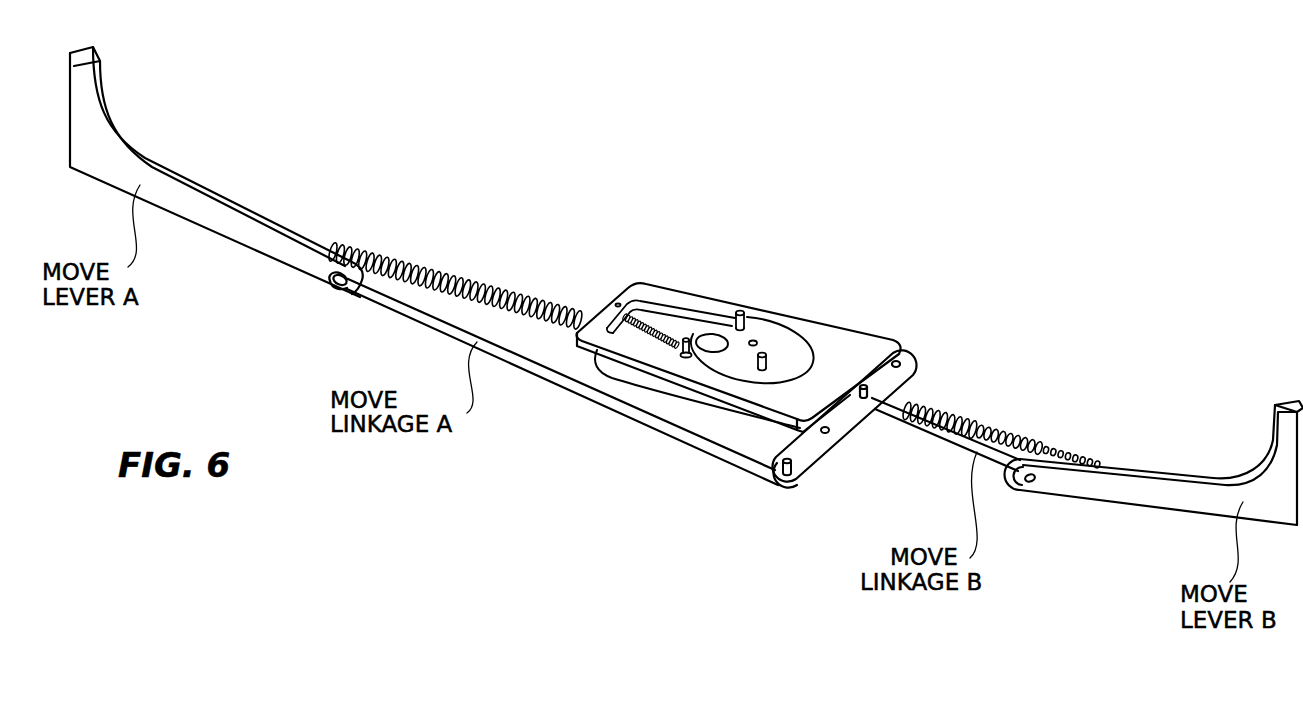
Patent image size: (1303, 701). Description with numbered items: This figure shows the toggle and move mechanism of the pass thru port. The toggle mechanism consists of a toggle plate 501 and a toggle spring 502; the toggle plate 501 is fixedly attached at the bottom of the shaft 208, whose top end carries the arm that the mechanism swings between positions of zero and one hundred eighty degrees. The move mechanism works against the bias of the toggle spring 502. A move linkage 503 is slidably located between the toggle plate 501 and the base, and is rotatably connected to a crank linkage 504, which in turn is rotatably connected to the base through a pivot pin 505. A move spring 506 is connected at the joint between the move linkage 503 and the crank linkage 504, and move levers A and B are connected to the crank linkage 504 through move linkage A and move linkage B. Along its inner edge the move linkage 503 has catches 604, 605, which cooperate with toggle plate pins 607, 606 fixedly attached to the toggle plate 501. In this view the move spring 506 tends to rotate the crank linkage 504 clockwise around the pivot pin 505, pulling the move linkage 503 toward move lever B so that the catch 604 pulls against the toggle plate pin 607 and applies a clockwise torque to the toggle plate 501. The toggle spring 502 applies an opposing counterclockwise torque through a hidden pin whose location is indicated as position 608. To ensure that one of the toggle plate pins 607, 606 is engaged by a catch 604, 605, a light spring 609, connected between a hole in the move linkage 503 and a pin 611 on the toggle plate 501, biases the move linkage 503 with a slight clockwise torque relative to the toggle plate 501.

The shaft 208 is at (713, 347).
The toggle plate 501 is at (597, 357).
The toggle spring 502 is at (462, 278).
The move linkage 503 is at (877, 340).
The crank linkage 504 is at (922, 366).
The pivot pin 505 is at (827, 433).
The move spring 506 is at (1014, 433).
The catch 604 is at (738, 312).
The catch 605 is at (668, 358).
The toggle plate pin 606 is at (768, 361).
The toggle plate pin 607 is at (757, 341).
The position of toggle spring pin 608 is at (800, 322).
The light spring 609 is at (647, 310).
The pin 611 is at (686, 340).